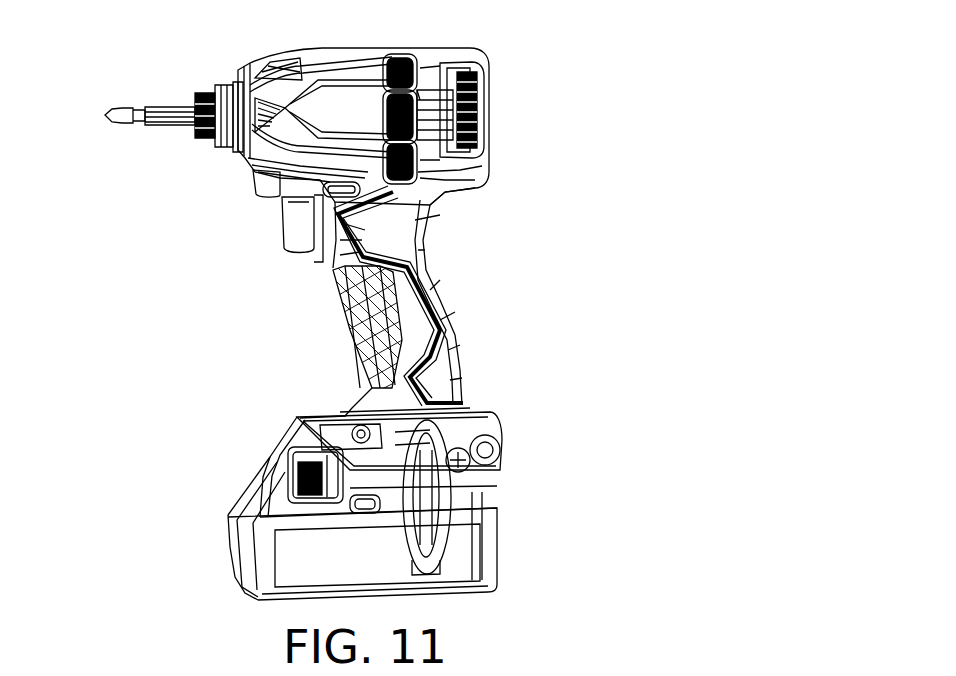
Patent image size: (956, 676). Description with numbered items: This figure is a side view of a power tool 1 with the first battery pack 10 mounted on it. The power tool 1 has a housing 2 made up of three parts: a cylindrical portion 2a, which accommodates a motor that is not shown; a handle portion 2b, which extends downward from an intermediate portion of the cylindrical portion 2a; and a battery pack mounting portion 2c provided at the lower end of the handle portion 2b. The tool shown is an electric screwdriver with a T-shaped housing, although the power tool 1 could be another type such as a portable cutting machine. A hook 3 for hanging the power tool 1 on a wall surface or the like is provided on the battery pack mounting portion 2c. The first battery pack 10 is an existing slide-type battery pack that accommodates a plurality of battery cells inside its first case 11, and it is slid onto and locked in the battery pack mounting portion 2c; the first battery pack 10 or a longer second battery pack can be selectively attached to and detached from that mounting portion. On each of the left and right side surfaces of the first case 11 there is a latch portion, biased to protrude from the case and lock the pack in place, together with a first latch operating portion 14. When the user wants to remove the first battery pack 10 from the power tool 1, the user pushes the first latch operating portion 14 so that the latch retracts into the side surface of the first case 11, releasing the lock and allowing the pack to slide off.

The power tool 1 is at (714, 621).
The housing 2 is at (452, 301).
The cylindrical portion 2a is at (338, 57).
The handle portion 2b is at (340, 310).
The battery pack mounting portion 2c is at (314, 412).
The hook 3 is at (444, 497).
The first battery pack 10 is at (232, 568).
The first case 11 is at (228, 530).
The first latch operating portion 14 is at (265, 460).